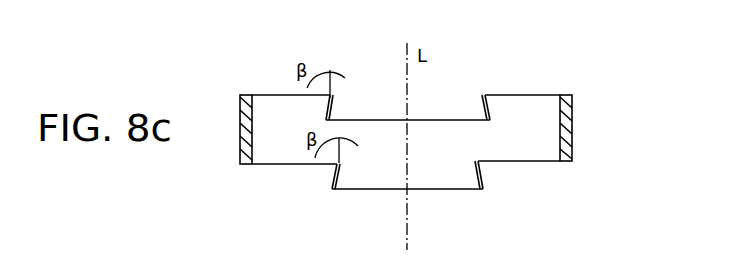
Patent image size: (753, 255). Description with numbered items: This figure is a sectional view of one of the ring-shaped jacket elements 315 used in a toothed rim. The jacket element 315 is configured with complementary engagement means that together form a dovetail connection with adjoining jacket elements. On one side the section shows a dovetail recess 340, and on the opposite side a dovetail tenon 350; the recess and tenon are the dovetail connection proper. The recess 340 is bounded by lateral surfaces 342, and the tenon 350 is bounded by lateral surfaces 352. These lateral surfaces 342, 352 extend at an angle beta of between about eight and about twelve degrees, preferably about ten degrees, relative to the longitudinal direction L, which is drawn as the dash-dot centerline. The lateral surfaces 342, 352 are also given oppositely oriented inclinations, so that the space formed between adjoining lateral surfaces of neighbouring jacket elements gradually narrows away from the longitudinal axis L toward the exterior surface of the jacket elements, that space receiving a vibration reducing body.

The ring-shaped jacket element 315 is at (583, 112).
The dovetail recess 340 is at (423, 120).
The lateral surfaces 342 is at (331, 112).
The dovetail tenon 350 is at (440, 190).
The lateral surfaces 352 is at (332, 180).